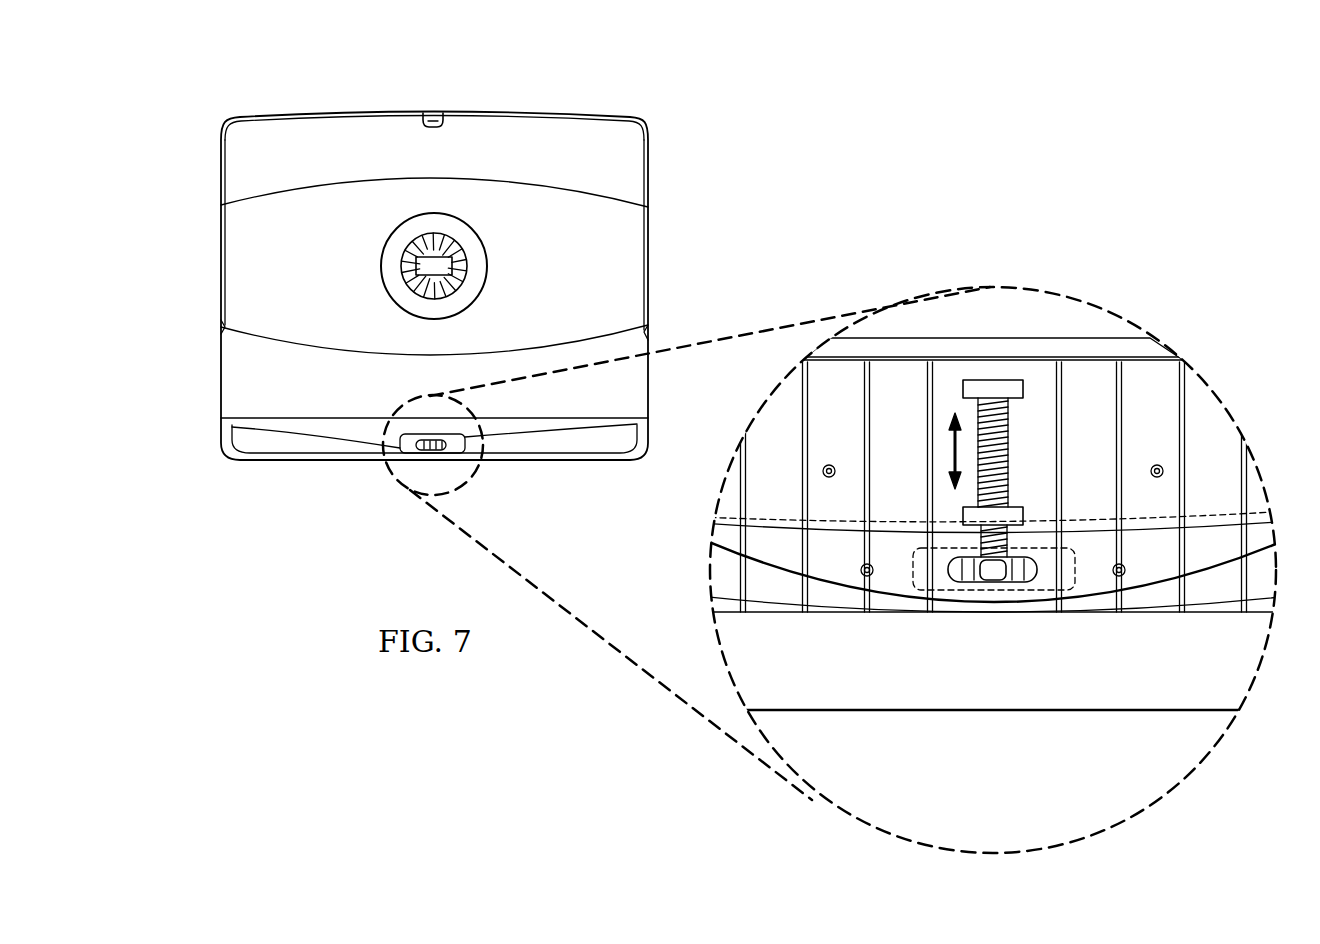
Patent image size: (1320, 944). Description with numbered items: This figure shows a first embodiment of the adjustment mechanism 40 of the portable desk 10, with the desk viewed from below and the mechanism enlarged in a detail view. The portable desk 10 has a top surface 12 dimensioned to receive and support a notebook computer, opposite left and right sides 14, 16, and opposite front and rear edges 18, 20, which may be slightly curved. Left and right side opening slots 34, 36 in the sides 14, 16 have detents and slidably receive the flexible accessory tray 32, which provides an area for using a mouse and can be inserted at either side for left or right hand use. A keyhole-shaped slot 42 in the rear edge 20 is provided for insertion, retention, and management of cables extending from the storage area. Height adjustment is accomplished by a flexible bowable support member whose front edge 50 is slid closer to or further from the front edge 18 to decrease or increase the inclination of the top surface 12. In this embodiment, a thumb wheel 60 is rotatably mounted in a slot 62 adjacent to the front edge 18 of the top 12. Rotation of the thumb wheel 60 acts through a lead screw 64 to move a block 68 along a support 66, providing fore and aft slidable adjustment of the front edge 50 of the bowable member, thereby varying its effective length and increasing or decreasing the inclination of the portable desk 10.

The portable desk 10 is at (206, 108).
The top surface 12 is at (295, 163).
The left side 14 is at (220, 374).
The right side 16 is at (648, 392).
The front edge 18 is at (290, 461).
The rear edge 20 is at (535, 116).
The accessory tray 32 is at (650, 252).
The left side opening slot 34 is at (216, 327).
The right side opening slot 36 is at (656, 336).
The adjustment mechanism 40 is at (410, 436).
The keyhole-shaped slot 42 is at (428, 110).
The front edge of the bowable member 50 is at (768, 530).
The thumb wheel 60 is at (985, 582).
The slot 62 is at (1008, 582).
The lead screw 64 is at (1010, 440).
The support 66 is at (1073, 375).
The block 68 is at (975, 380).